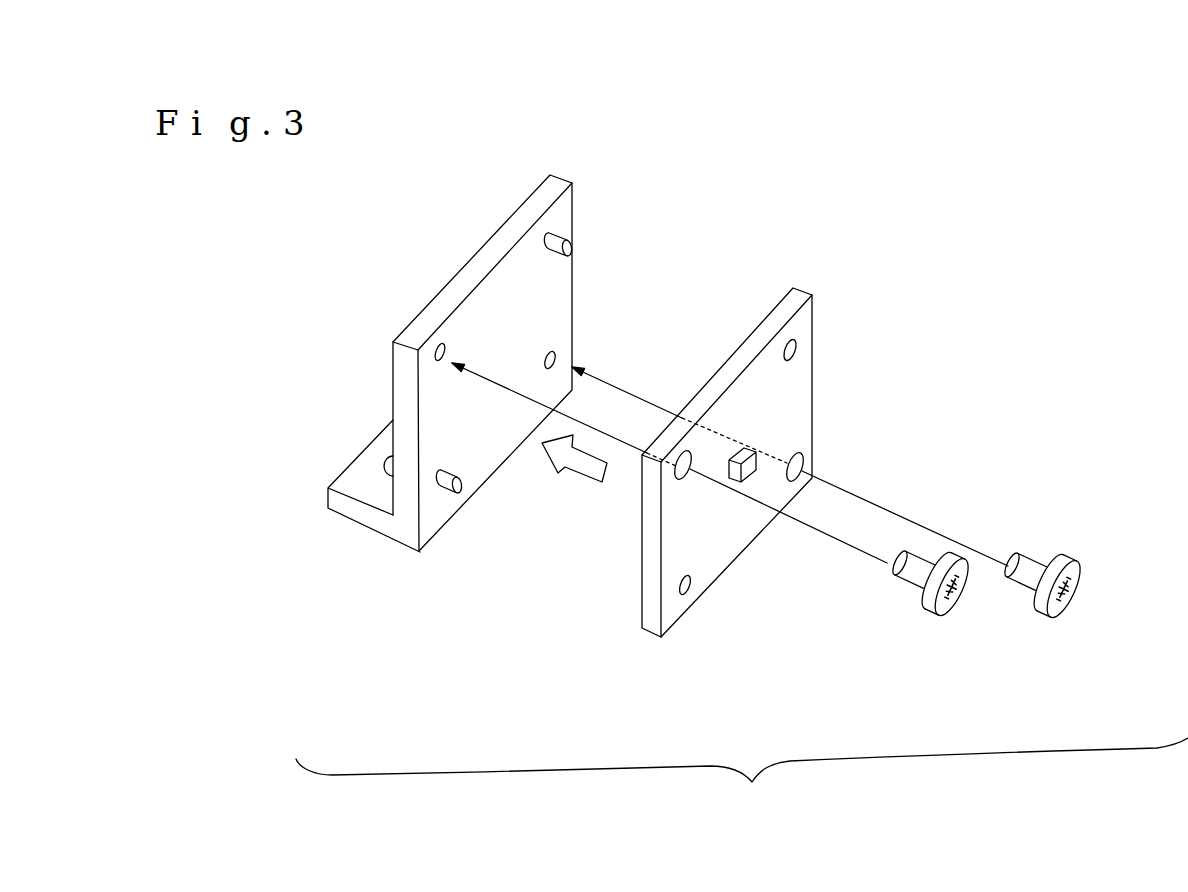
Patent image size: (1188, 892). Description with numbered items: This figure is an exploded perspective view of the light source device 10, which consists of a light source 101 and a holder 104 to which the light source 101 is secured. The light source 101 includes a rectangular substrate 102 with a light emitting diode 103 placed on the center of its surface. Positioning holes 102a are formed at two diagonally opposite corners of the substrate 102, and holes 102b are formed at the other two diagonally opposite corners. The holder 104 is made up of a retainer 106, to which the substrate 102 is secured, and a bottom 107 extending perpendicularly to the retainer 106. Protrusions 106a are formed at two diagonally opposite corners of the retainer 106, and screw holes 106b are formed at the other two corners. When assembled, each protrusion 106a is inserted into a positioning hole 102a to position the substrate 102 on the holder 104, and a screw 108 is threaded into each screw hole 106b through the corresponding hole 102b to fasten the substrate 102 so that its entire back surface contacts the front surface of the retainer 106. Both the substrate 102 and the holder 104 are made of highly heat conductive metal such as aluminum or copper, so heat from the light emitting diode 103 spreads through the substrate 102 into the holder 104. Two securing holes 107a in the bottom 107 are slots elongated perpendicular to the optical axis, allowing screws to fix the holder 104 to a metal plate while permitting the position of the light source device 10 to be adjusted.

The light source device 10 is at (742, 776).
The light source 101 is at (818, 262).
The substrate 102 is at (683, 550).
The positioning holes 102a is at (797, 348).
The holes 102b is at (685, 473).
The light emitting diode 103 is at (753, 483).
The holder 104 is at (588, 182).
The retainer 106 is at (467, 277).
The protrusions 106a is at (574, 246).
The screw holes 106b is at (437, 338).
The bottom 107 is at (359, 537).
The securing holes 107a is at (384, 463).
The screw 108 is at (925, 553).